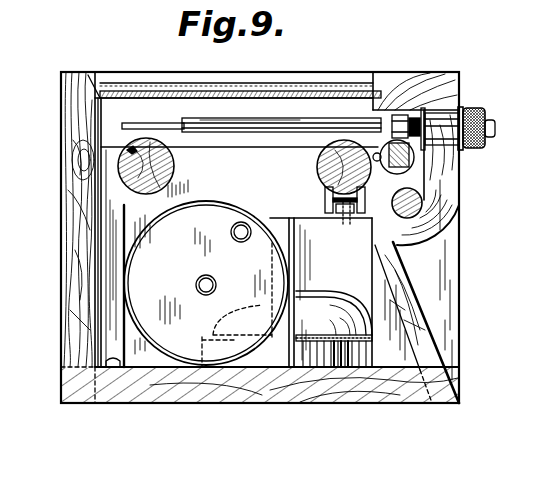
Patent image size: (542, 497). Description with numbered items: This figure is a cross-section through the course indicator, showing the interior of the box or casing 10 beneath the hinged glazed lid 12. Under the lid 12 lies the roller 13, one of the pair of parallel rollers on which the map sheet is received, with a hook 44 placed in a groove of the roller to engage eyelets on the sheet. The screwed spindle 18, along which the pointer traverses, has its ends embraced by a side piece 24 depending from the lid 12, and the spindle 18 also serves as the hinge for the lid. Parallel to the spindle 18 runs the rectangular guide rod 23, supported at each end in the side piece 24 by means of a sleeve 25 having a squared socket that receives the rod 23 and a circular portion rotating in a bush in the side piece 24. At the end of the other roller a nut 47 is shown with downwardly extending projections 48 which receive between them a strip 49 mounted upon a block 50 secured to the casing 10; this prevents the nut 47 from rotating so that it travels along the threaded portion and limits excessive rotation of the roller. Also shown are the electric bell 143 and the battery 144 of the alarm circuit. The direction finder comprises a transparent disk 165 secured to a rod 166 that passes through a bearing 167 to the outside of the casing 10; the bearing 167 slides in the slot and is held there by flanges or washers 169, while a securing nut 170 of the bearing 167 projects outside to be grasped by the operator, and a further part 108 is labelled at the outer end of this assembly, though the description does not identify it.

The box or casing 10 is at (73, 213).
The hinged glazed top or lid 12 is at (180, 90).
The roller 13 is at (173, 168).
The screwed spindle 18 is at (421, 205).
The rectangular guide rod 23 is at (388, 143).
The side piece 24 is at (436, 227).
The sleeve 25 is at (411, 152).
The hook 44 is at (130, 150).
The nut 47 is at (324, 160).
The downwardly extending projection 48 is at (329, 200).
The strip 49 is at (343, 203).
The block 50 is at (284, 226).
The shaft end 108 is at (496, 128).
The electric bell 143 is at (328, 305).
The battery 144 is at (152, 277).
The disk 165 is at (131, 122).
The rod 166 is at (238, 126).
The bearing 167 is at (436, 120).
The flanges or washers 169 is at (462, 150).
The securing nut 170 is at (474, 110).